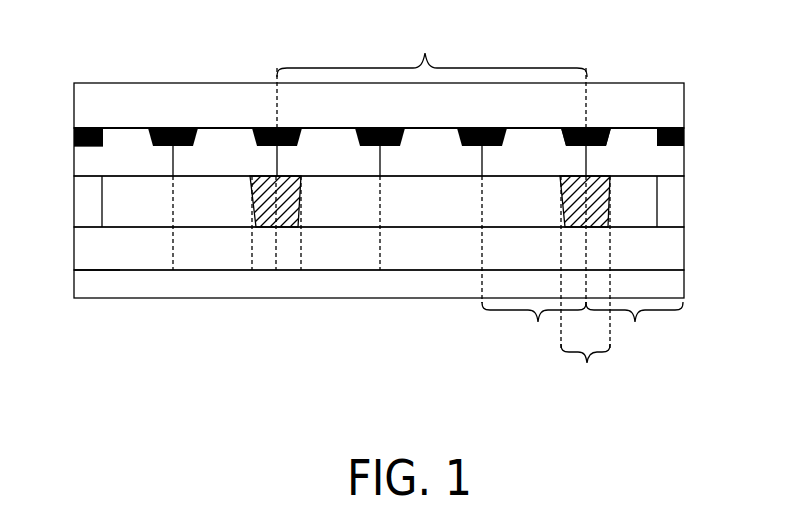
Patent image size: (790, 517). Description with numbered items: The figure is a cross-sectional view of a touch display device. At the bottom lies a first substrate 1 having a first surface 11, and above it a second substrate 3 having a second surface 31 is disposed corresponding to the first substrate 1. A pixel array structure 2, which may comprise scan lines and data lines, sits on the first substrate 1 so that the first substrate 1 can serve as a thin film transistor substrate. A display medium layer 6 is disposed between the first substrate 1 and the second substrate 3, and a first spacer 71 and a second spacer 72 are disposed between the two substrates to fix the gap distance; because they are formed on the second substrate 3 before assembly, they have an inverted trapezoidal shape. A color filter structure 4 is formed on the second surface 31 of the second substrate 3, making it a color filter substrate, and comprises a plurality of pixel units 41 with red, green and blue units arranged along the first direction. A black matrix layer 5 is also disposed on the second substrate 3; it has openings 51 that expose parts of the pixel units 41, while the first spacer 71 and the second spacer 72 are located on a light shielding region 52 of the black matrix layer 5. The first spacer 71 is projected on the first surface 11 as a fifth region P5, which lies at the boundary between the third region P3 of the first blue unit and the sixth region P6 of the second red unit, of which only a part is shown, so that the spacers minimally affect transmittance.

The first substrate 1 is at (676, 285).
The pixel array structure 2 is at (676, 247).
The second substrate 3 is at (676, 103).
The color filter structure 4 is at (676, 160).
The black matrix layer 5 is at (684, 133).
The display medium layer 6 is at (650, 202).
The first surface 11 is at (88, 269).
The second surface 31 is at (120, 129).
The pixel unit 41 is at (432, 47).
The opening 51 is at (214, 118).
The light shielding region 52 is at (605, 127).
The first spacer 71 is at (574, 220).
The second spacer 72 is at (266, 220).
The third region P3 is at (534, 330).
The fifth region P5 is at (585, 371).
The sixth region P6 is at (634, 330).